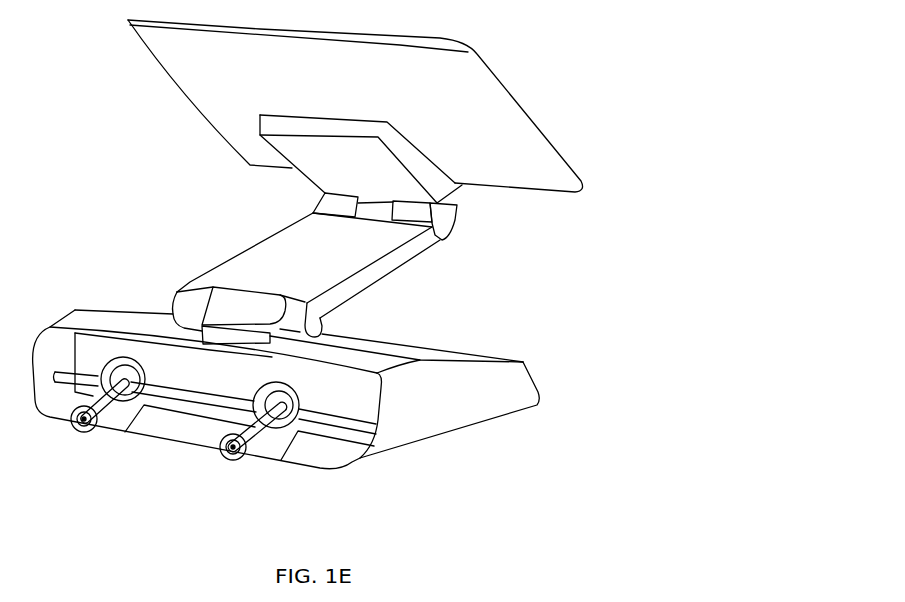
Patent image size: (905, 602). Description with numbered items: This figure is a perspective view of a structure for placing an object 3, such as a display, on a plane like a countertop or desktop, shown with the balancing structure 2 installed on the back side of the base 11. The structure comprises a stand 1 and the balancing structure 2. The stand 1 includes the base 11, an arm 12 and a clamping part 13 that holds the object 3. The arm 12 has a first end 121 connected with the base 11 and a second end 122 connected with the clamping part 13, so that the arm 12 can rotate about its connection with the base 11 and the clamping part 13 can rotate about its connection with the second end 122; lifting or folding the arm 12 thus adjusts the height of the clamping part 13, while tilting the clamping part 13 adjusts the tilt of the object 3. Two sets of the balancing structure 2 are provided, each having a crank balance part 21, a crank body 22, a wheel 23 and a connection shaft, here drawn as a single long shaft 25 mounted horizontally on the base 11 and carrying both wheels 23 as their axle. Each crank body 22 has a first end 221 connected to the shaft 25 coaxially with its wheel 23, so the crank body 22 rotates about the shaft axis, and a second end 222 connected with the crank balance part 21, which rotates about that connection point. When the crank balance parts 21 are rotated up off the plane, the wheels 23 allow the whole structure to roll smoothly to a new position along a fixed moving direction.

The stand 1 is at (188, 240).
The object 3 is at (513, 122).
The clamping part 13 is at (315, 158).
The arm 12 is at (349, 273).
The first end 121 is at (320, 316).
The second end 122 is at (436, 231).
The base 11 is at (443, 370).
The balancing structure 2 is at (215, 452).
The crank balance part 21 is at (70, 434).
The crank body 22 is at (90, 428).
The wheel 23 is at (249, 458).
The long shaft 25 is at (187, 430).
The first end 221 is at (287, 398).
The second end 222 is at (232, 401).